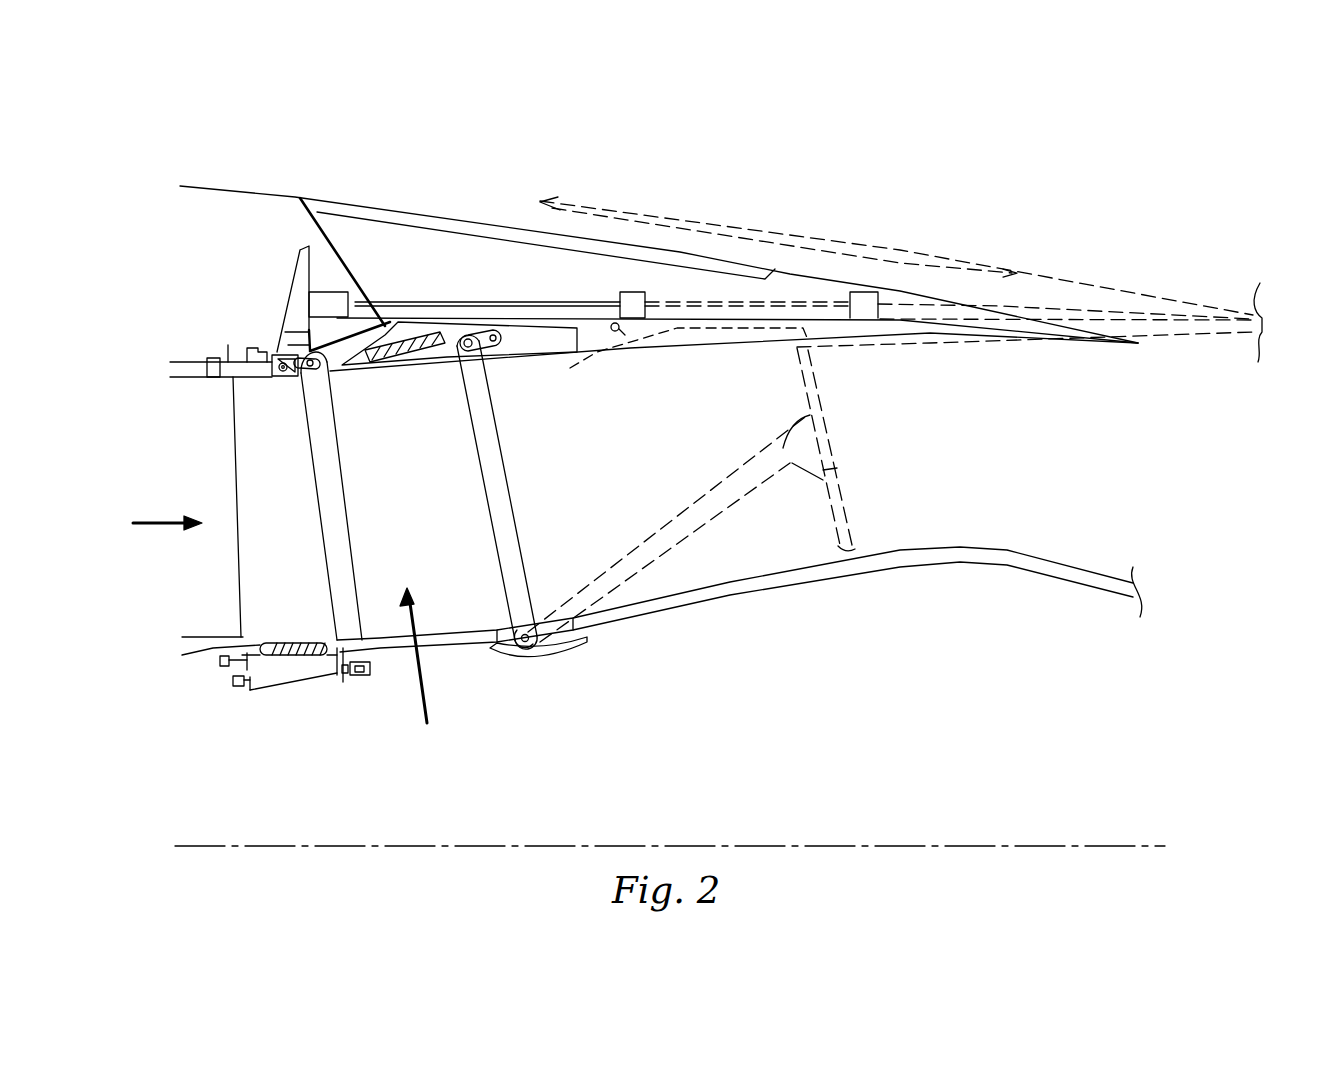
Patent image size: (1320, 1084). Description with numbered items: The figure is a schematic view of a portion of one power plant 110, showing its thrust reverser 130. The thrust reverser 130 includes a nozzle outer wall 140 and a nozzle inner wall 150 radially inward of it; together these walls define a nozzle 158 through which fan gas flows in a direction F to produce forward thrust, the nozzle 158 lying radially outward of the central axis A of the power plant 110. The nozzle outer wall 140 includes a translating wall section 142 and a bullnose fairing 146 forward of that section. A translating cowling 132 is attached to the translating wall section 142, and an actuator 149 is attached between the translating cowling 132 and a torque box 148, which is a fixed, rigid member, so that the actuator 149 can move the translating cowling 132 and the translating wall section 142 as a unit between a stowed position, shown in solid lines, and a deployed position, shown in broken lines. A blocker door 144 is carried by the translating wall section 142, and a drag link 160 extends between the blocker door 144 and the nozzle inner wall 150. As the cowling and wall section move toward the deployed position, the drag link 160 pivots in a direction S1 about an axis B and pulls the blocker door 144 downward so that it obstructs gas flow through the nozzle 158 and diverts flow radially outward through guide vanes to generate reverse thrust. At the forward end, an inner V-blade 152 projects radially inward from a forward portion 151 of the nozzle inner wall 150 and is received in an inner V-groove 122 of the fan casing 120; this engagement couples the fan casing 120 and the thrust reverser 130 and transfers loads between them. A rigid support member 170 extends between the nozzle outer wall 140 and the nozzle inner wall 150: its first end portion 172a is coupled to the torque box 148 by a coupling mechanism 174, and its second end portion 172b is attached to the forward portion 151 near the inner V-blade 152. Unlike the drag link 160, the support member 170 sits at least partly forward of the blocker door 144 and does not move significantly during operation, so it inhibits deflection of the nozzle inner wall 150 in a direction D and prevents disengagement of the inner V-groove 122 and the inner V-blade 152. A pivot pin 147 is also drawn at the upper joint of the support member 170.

The power plant 110 is at (962, 136).
The fan casing 120 is at (178, 338).
The inner V-groove 122 is at (330, 677).
The thrust reverser 130 is at (650, 198).
The translating cowling 132 is at (737, 265).
The nozzle outer wall 140 is at (825, 333).
The translating wall section 142 is at (725, 330).
The blocker door 144 is at (527, 352).
The bullnose fairing 146 is at (343, 368).
The pivot pin 147 is at (330, 382).
The torque box 148 is at (300, 325).
The actuator 149 is at (328, 291).
The nozzle inner wall 150 is at (443, 647).
The forward portion 151 is at (363, 648).
The inner V-blade 152 is at (333, 642).
The nozzle 158 is at (897, 523).
The drag link 160 is at (505, 483).
The rigid support member 170 is at (342, 486).
The first end portion 172a is at (308, 386).
The second end portion 172b is at (355, 623).
The coupling mechanism 174 is at (278, 383).
The central axis A is at (1032, 845).
The axis B is at (540, 650).
The direction D is at (416, 655).
The direction F is at (160, 528).
The direction S1 is at (594, 582).